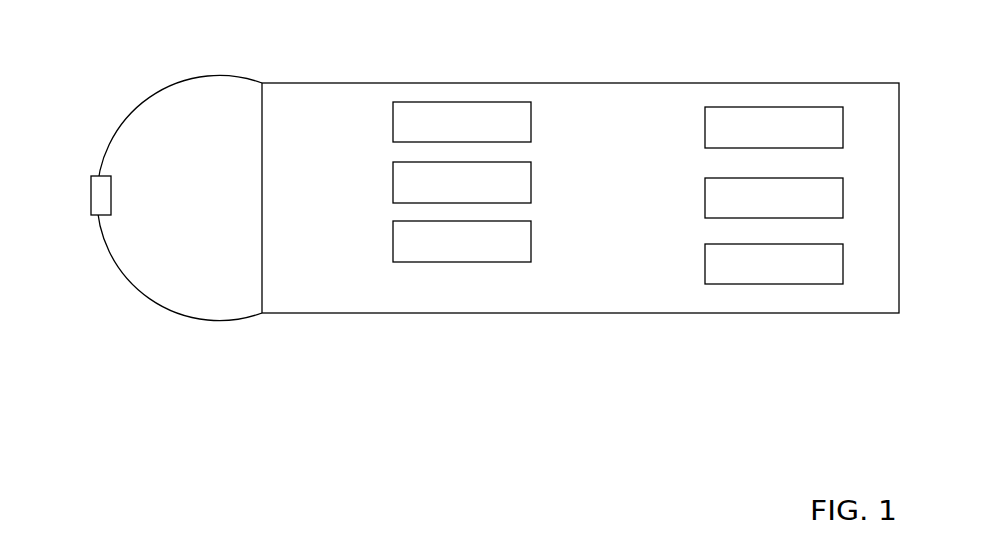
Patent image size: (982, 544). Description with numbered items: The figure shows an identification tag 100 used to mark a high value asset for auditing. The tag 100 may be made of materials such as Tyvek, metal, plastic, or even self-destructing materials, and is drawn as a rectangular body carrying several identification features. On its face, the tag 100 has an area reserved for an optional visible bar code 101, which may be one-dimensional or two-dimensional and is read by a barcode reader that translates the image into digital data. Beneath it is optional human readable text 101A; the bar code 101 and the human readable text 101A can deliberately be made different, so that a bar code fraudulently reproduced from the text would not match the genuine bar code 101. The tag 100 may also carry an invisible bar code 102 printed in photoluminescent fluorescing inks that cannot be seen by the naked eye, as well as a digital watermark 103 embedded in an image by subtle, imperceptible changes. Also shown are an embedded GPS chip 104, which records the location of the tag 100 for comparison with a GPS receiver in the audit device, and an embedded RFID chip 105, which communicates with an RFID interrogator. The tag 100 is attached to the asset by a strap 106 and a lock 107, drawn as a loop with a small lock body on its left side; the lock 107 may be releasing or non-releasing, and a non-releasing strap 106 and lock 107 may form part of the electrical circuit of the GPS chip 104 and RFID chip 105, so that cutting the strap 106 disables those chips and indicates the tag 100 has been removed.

The tag 100 is at (548, 83).
The bar code 101 is at (390, 130).
The human readable text 101A is at (392, 188).
The invisible bar code 102 is at (392, 250).
The digital watermark 103 is at (703, 135).
The GPS chip 104 is at (703, 205).
The RFID chip 105 is at (703, 273).
The strap 106 is at (130, 118).
The lock 107 is at (97, 215).